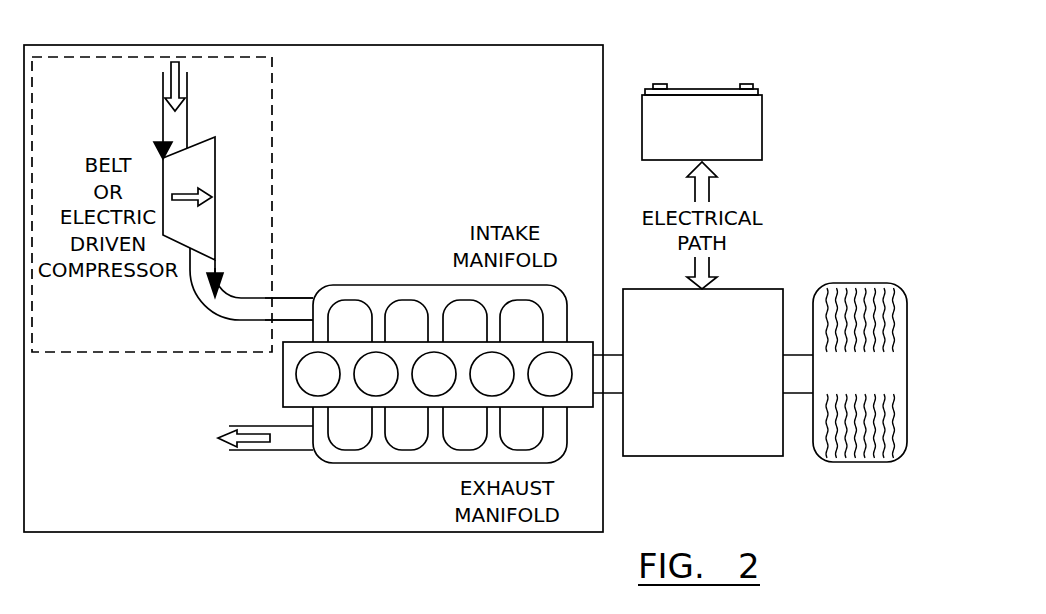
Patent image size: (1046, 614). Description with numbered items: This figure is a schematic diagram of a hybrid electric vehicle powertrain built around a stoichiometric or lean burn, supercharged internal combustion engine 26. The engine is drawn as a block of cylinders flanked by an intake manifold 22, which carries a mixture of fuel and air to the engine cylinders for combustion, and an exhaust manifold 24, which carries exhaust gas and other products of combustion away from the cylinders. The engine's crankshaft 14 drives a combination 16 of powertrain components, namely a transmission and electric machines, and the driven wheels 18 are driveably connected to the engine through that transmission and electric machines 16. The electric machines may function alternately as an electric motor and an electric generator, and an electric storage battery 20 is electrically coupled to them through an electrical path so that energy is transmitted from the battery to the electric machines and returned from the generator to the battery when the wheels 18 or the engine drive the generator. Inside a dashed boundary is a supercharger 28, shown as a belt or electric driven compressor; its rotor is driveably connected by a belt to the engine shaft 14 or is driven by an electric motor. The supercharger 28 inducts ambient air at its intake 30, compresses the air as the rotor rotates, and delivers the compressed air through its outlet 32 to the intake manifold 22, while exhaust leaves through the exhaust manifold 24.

The crankshaft 14 is at (608, 395).
The combination of transmission and electric machines 16 is at (763, 288).
The driven wheels 18 is at (863, 287).
The electric storage battery 20 is at (762, 130).
The intake manifold 22 is at (290, 297).
The exhaust manifold 24 is at (298, 451).
The supercharged internal combustion engine 26 is at (603, 82).
The supercharger 28 is at (272, 123).
The supercharger intake 30 is at (163, 111).
The supercharger outlet 32 is at (228, 288).